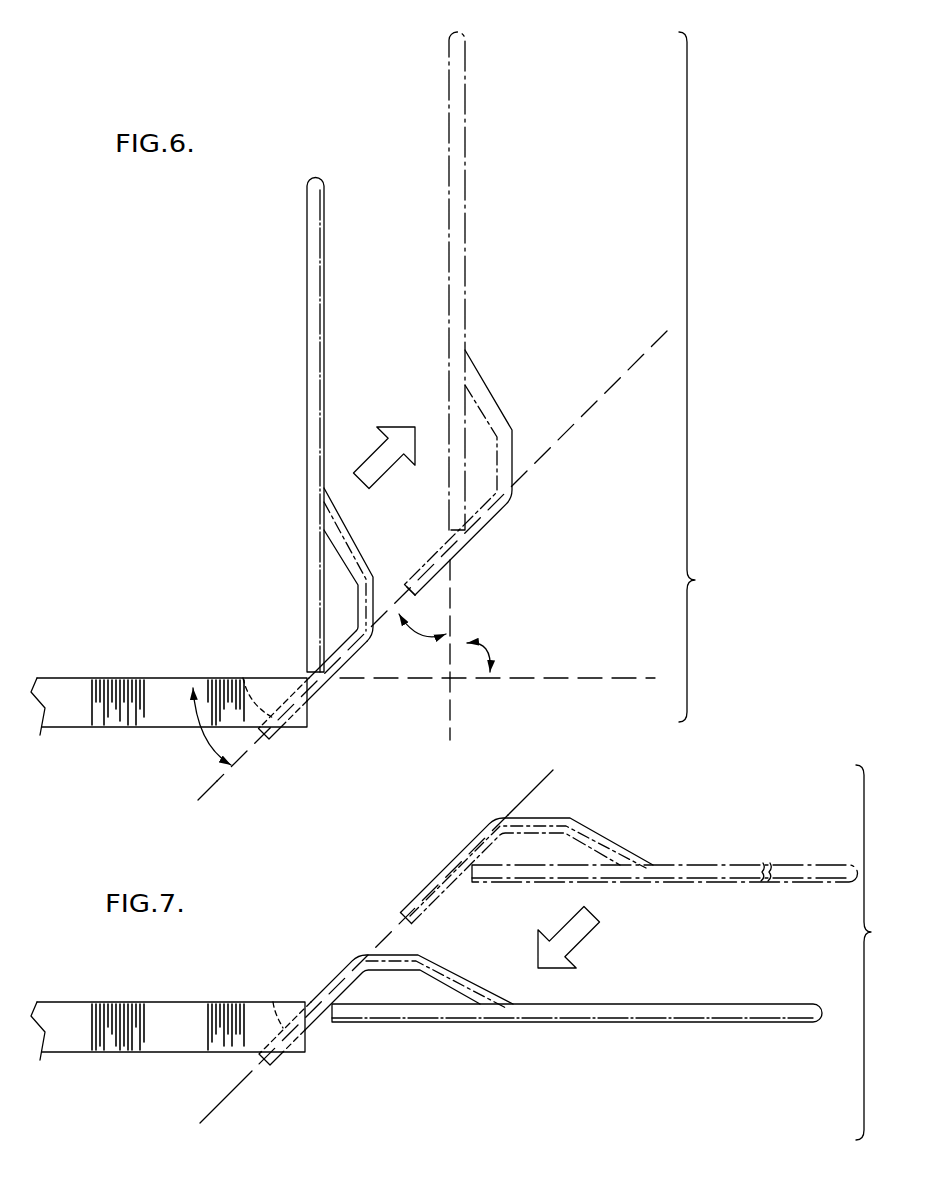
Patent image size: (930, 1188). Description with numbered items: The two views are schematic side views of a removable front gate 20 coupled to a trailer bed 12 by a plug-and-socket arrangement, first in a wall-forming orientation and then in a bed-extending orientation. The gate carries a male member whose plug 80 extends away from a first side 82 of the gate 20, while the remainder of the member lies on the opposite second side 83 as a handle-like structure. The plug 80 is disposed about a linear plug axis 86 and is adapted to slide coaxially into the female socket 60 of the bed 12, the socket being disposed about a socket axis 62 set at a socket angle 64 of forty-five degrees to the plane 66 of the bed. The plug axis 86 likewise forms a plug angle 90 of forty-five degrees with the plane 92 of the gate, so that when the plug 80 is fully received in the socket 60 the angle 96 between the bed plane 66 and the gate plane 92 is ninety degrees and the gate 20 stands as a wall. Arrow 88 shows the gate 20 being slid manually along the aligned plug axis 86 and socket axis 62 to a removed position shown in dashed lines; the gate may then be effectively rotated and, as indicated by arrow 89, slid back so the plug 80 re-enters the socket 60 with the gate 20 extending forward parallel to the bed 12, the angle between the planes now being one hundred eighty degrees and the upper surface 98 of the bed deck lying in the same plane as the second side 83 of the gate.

In FIG. 6, the bed 12 is at (80, 686).
In FIG. 7, the bed 12 is at (75, 1010).
In FIG. 6, the front gate 20 is at (445, 169).
In FIG. 7, the front gate 20 is at (725, 865).
In FIG. 6, the socket 60 is at (243, 678).
In FIG. 7, the socket 60 is at (273, 1002).
In FIG. 6, the socket axis 62 is at (214, 793).
In FIG. 7, the socket axis 62 is at (240, 1095).
In FIG. 6, the socket angle 64 is at (201, 745).
In FIG. 6, the plane of the bed 66 is at (561, 677).
In FIG. 6, the plug 80 is at (277, 745).
In FIG. 7, the plug 80 is at (435, 902).
In FIG. 6, the first side of the gate 82 is at (305, 597).
In FIG. 6, the second side of the gate 83 is at (326, 364).
In FIG. 7, the second side of the gate 83 is at (686, 1004).
In FIG. 6, the plug axis 86 is at (608, 382).
In FIG. 7, the plug axis 86 is at (552, 772).
In FIG. 6, the arrow 88 is at (378, 462).
In FIG. 7, the arrow 89 is at (598, 925).
In FIG. 6, the plug angle 90 is at (412, 633).
In FIG. 6, the plane of the front gate 92 is at (447, 667).
In FIG. 6, the angle between bed plane and gate plane 96 is at (476, 640).
In FIG. 7, the upper surface of the bed deck 98 is at (194, 1006).